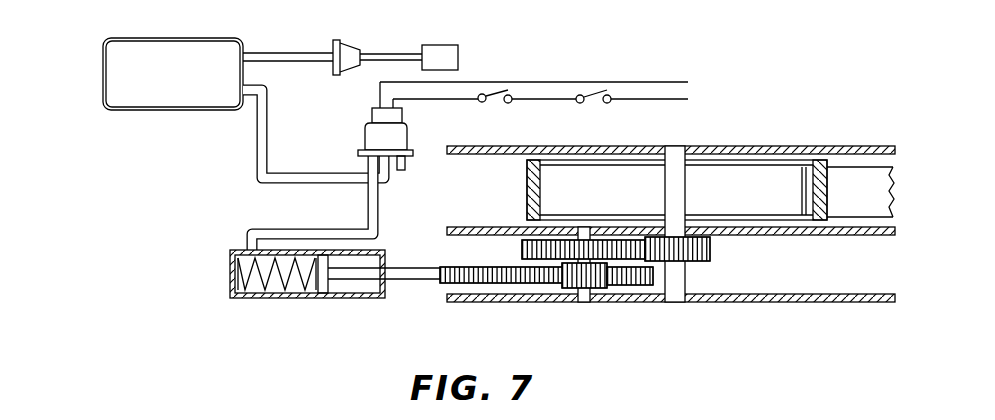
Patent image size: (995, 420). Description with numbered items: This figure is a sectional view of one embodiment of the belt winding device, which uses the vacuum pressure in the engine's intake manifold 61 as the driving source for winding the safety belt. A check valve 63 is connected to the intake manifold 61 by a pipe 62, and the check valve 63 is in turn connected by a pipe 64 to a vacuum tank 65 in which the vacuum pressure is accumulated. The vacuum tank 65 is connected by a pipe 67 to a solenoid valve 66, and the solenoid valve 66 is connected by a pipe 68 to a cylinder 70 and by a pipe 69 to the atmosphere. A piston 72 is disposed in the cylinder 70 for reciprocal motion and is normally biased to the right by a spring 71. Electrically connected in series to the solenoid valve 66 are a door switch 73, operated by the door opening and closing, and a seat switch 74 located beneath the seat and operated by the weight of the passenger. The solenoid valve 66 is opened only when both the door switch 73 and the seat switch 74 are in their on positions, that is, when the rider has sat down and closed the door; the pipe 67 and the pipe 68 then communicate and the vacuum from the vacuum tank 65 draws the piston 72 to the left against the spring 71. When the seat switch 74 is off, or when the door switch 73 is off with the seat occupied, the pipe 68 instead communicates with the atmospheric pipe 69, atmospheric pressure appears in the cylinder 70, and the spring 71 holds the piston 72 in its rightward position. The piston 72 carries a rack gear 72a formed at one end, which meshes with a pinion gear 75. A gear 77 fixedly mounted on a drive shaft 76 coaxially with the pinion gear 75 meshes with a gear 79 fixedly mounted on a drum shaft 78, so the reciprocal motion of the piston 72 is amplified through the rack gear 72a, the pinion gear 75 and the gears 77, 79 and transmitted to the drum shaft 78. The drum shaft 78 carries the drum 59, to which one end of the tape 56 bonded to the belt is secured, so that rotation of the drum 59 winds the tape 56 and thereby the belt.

The tape 56 is at (865, 168).
The drum 59 is at (756, 166).
The intake manifold 61 is at (458, 56).
The pipe 62 is at (395, 54).
The check valve 63 is at (346, 40).
The pipe 64 is at (287, 53).
The vacuum tank 65 is at (192, 38).
The solenoid valve 66 is at (365, 136).
The pipe 67 is at (256, 151).
The pipe 68 is at (379, 212).
The pipe 69 is at (405, 166).
The cylinder 70 is at (340, 298).
The spring 71 is at (262, 294).
The piston 72 is at (413, 280).
The rack gear 72a is at (512, 284).
The door switch 73 is at (599, 104).
The seat switch 74 is at (494, 104).
The pinion gear 75 is at (600, 288).
The drive shaft 76 is at (583, 302).
The gear 77 is at (522, 248).
The drum shaft 78 is at (676, 302).
The gear 79 is at (710, 250).